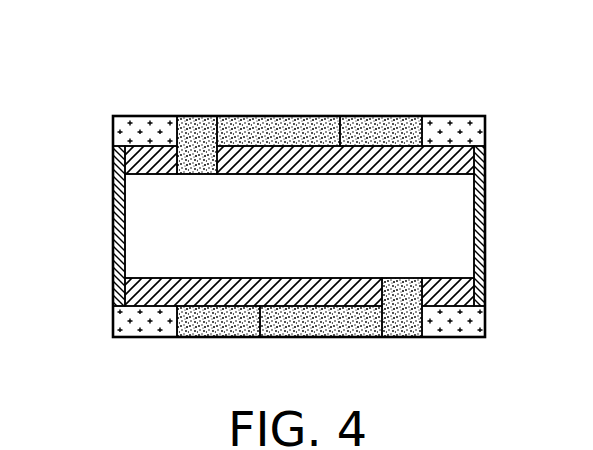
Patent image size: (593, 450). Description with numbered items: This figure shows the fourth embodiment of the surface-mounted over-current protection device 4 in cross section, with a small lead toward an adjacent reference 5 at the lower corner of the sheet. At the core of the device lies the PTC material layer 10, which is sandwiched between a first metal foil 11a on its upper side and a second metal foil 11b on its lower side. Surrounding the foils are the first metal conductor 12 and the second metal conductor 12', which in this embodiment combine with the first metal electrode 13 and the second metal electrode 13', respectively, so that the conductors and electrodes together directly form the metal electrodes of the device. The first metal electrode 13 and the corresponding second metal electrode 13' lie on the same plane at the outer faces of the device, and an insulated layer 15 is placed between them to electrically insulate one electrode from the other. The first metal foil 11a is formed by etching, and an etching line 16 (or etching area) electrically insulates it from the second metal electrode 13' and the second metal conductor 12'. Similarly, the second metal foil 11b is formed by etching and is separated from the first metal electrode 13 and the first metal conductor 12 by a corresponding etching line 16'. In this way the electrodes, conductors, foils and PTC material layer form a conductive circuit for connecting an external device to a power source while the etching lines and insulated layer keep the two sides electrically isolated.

The surface-mounted over-current protection device 4 is at (482, 82).
The adjacent figure reference 5 is at (507, 448).
The PTC material layer 10 is at (455, 207).
The first metal foil 11a is at (372, 150).
The second metal foil 11b is at (244, 300).
The first metal conductor 12 is at (336, 226).
The second metal conductor 12' is at (88, 226).
The first metal electrode 13 is at (485, 228).
The second metal electrode 13' is at (114, 226).
The insulated layer 15 is at (306, 116).
The etching line 16 is at (197, 116).
The etching line 16' is at (402, 339).